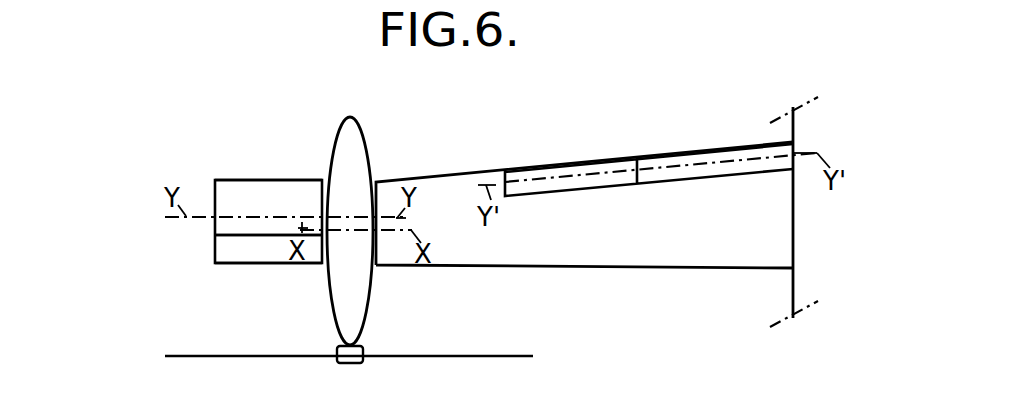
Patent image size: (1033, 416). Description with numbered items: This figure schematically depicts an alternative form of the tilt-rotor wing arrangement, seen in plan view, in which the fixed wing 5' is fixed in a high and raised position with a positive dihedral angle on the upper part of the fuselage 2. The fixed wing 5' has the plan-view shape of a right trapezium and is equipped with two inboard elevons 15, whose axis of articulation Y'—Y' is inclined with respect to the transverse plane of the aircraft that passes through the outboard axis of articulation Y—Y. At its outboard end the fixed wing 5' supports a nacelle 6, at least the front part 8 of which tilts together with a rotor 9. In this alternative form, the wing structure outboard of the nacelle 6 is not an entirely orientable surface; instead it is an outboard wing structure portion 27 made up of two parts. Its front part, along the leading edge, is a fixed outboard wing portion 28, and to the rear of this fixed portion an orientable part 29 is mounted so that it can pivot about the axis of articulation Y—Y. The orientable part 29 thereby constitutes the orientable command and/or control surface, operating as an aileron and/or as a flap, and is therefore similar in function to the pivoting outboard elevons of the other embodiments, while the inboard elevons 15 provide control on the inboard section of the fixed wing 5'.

The outboard wing structure portion 27 is at (208, 187).
The orientable part 29 is at (257, 200).
The fixed outboard wing portion 28 is at (232, 250).
The nacelle 6 is at (333, 233).
The front part 8 is at (353, 297).
The rotor 9 is at (513, 354).
The fixed wing 5' is at (584, 234).
The inboard elevons 15 is at (653, 160).
The fuselage 2 is at (812, 269).